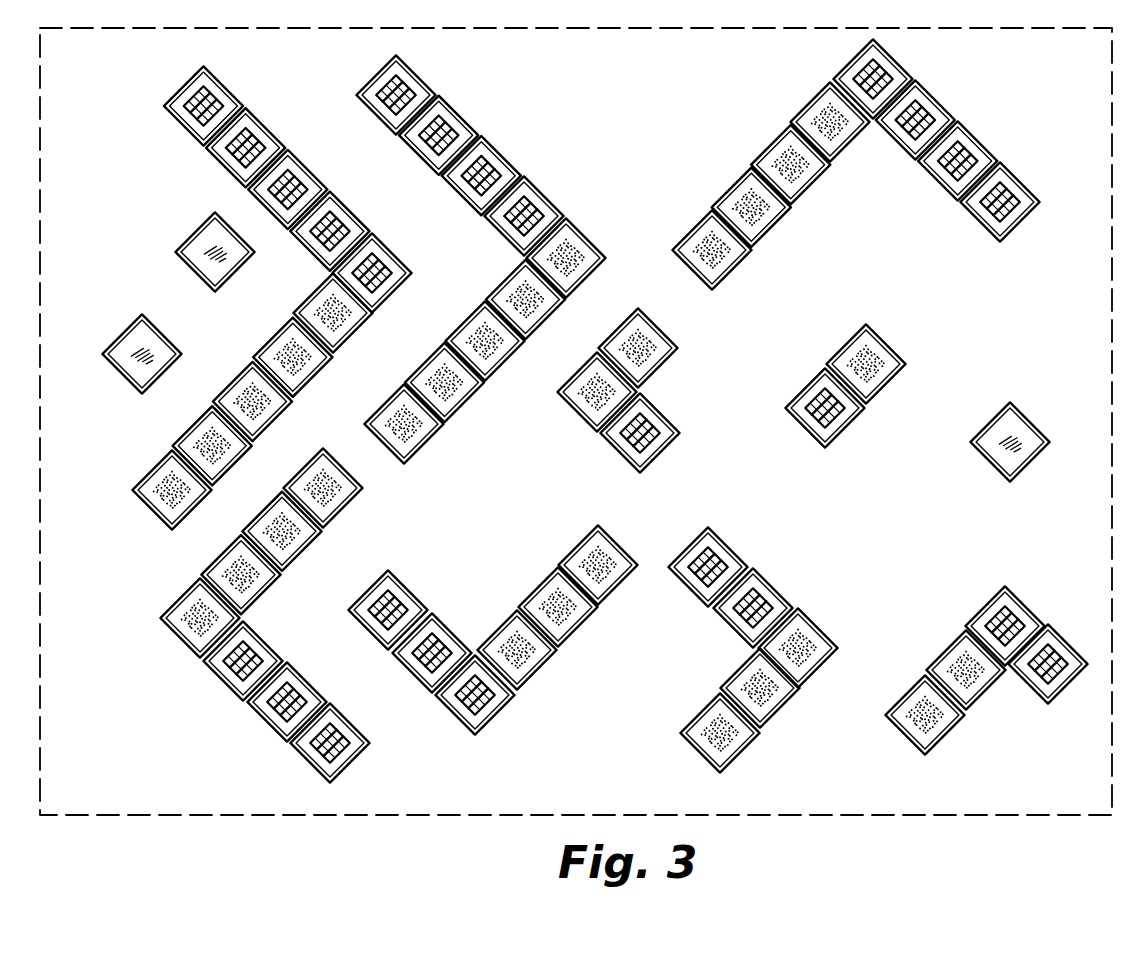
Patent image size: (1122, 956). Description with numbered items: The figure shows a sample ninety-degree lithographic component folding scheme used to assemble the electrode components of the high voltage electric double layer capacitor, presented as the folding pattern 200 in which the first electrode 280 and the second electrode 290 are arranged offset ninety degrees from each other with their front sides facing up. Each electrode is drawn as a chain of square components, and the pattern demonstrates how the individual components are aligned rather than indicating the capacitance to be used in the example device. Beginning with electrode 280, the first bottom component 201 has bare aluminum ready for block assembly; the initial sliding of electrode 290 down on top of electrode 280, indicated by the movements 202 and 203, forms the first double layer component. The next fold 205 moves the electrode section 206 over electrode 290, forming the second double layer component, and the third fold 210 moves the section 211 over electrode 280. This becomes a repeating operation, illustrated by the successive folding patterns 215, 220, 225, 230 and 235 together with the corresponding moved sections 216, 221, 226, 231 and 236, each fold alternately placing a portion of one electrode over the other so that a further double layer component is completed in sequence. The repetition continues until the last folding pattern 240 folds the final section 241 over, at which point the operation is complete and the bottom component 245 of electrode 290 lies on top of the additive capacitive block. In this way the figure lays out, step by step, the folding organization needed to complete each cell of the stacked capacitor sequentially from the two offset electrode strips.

The folding pattern 200 is at (110, 78).
The first bottom component 201 is at (327, 272).
The blank tile movement 202 is at (146, 403).
The tile movement direction 203 is at (252, 401).
The next fold 205 is at (366, 92).
The electrode section 206 is at (478, 252).
The third fold 210 is at (842, 72).
The section 211 is at (870, 165).
The third tile group 215 is at (167, 612).
The tile group movement direction 216 is at (240, 618).
The fourth tile group 220 is at (500, 710).
The tile group movement direction 221 is at (492, 639).
The fifth tile group 225 is at (727, 617).
The tile group movement direction 226 is at (752, 644).
The sixth tile group 230 is at (1025, 610).
The tile group movement direction 231 is at (984, 659).
The seventh tile group 235 is at (662, 367).
The tile group movement direction 236 is at (643, 403).
The last folding pattern 240 is at (900, 363).
The folded section 241 is at (877, 378).
The bottom component 245 is at (1030, 418).
The first electrode 280 is at (279, 143).
The second electrode 290 is at (300, 395).